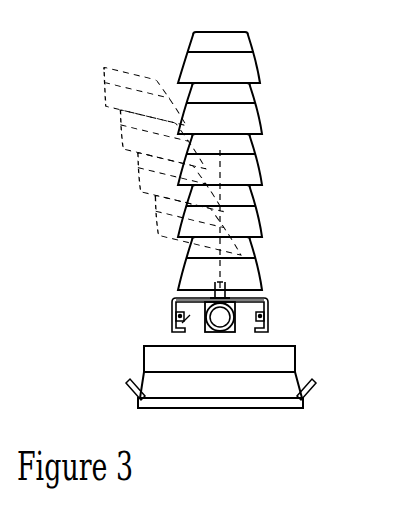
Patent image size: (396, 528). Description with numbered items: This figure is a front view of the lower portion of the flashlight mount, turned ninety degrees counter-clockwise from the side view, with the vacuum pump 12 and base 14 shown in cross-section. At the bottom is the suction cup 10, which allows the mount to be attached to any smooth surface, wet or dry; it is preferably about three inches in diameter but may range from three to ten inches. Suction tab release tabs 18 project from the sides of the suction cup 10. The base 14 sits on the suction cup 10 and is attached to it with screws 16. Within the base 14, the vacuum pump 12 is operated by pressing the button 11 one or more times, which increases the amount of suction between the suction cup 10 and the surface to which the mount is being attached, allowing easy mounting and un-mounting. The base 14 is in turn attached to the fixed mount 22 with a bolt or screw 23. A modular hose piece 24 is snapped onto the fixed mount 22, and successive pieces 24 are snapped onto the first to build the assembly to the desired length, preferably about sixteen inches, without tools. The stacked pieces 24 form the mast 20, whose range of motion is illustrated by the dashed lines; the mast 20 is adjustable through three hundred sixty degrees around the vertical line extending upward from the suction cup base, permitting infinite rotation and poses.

The suction cup 10 is at (263, 378).
The button 11 is at (181, 299).
The vacuum pump 12 is at (172, 331).
The base 14 is at (265, 317).
The screws 16 is at (268, 327).
The suction tab release tabs 18 is at (124, 386).
The mast 20 is at (72, 118).
The fixed mount 22 is at (250, 295).
The bolt or screw 23 is at (222, 288).
The modular hose piece 24 is at (252, 97).